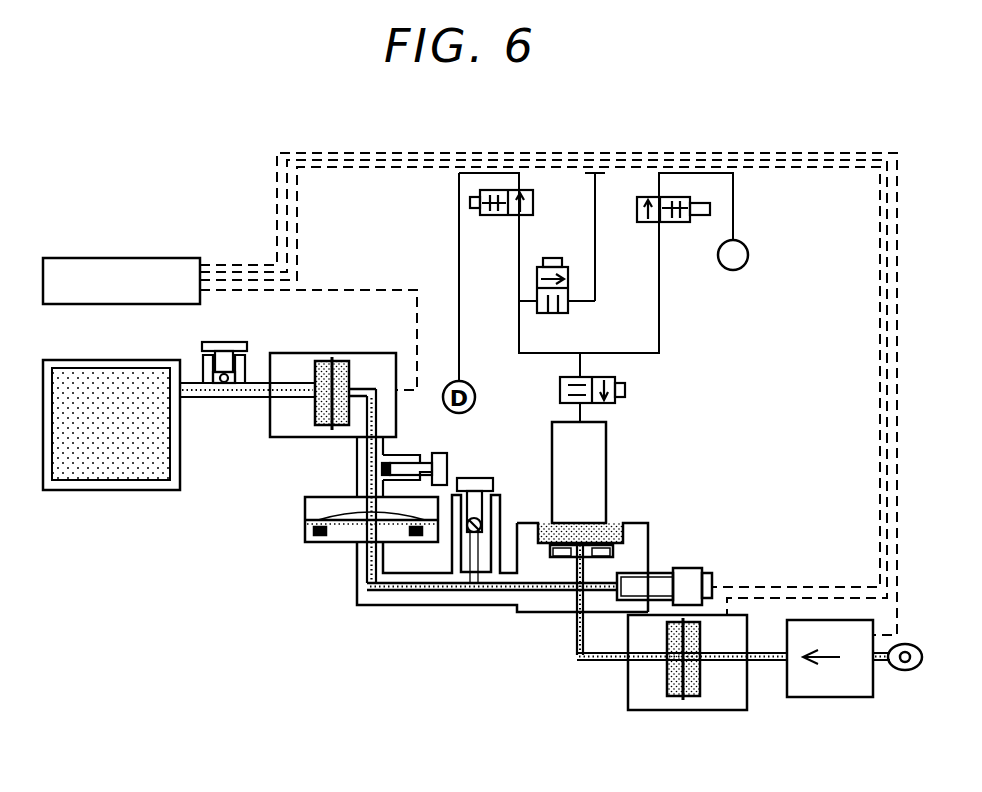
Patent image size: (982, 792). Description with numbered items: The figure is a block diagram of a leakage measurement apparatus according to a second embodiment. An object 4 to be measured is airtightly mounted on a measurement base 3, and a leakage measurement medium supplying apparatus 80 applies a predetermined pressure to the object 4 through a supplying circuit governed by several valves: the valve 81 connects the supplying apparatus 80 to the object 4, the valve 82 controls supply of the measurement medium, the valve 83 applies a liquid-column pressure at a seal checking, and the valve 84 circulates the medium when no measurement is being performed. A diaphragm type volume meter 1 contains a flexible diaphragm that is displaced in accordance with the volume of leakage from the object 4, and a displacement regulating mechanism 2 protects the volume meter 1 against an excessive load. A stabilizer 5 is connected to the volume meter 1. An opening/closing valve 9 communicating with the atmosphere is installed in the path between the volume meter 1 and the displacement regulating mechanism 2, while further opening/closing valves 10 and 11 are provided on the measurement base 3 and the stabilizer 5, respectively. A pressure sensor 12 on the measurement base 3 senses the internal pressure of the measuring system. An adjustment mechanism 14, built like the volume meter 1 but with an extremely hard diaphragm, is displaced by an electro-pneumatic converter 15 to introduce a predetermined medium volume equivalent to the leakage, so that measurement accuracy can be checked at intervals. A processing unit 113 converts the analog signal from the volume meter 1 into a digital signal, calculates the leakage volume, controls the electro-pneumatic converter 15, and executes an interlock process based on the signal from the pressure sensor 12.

The diaphragm type volume meter 1 is at (305, 352).
The displacement regulating mechanism 2 is at (310, 507).
The measurement base 3 is at (633, 540).
The object to be measured 4 is at (593, 458).
The stabilizer 5 is at (120, 470).
The opening/closing valve 9 is at (447, 455).
The opening/closing valve 10 is at (487, 478).
The opening/closing valve 11 is at (222, 340).
The pressure sensor 12 is at (690, 572).
The adjustment mechanism 14 is at (635, 697).
The electro-pneumatic converter 15 is at (843, 680).
The leakage measurement medium supplying apparatus 80 is at (749, 255).
The valve 81 is at (625, 390).
The valve 82 is at (678, 222).
The valve 83 is at (560, 315).
The valve 84 is at (498, 218).
The processing unit 113 is at (130, 270).